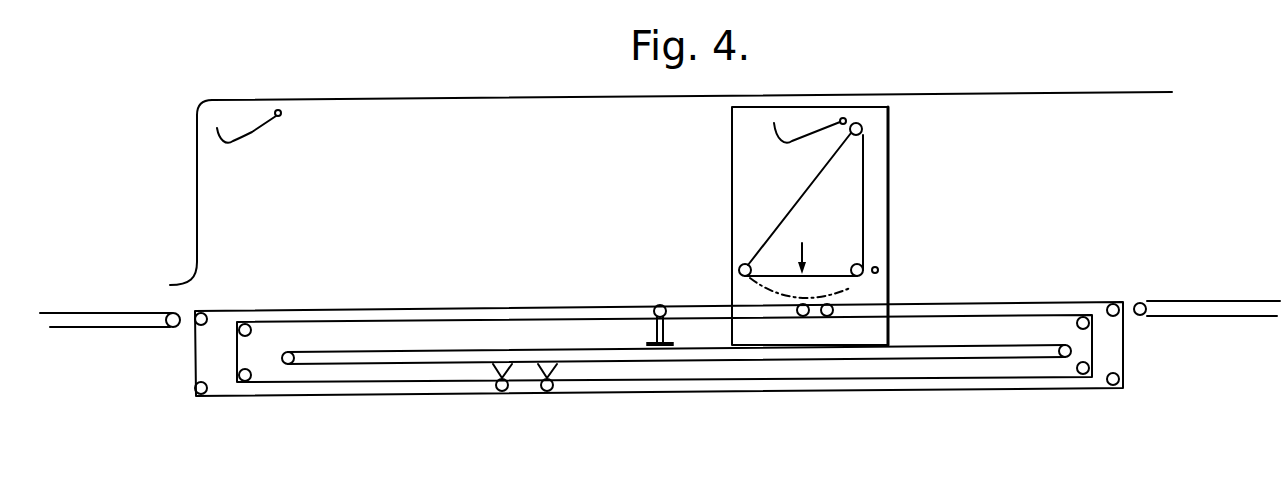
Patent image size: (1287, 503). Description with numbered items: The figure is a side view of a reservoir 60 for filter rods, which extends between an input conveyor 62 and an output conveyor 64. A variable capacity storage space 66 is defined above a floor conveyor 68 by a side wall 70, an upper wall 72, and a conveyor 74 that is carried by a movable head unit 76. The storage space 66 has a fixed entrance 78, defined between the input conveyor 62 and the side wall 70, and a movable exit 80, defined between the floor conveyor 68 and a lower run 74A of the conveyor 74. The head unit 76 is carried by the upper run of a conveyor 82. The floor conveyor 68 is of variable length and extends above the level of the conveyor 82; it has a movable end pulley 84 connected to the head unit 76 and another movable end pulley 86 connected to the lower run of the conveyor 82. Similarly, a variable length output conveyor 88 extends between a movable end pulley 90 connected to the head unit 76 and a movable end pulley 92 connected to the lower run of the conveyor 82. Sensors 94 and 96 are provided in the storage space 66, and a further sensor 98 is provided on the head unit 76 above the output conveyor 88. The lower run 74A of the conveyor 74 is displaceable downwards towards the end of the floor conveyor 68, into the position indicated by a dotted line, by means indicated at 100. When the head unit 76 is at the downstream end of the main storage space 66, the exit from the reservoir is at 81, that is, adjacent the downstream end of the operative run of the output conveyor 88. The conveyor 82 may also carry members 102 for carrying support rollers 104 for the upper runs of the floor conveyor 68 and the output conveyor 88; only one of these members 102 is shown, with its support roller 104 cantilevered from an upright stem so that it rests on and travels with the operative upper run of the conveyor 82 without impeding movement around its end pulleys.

The reservoir 60 is at (487, 83).
The input conveyor 62 is at (100, 312).
The output conveyor 64 is at (1200, 300).
The variable capacity storage space 66 is at (494, 218).
The floor conveyor 68 is at (413, 307).
The side wall 70 is at (197, 209).
The upper wall 72 is at (530, 99).
The conveyor 74 is at (779, 188).
The lower run 74A is at (827, 274).
The movable head unit 76 is at (888, 138).
The fixed entrance 78 is at (207, 287).
The movable exit 80 is at (829, 287).
The exit from the reservoir 81 is at (1133, 289).
The conveyor 82 is at (570, 348).
The movable end pulley 84 is at (803, 316).
The movable end pulley 86 is at (500, 391).
The variable length output conveyor 88 is at (1015, 302).
The movable end pulley 90 is at (829, 316).
The movable end pulley 92 is at (549, 391).
The sensor 94 is at (253, 134).
The sensor 96 is at (793, 138).
The sensor 98 is at (879, 271).
The means 100 is at (800, 253).
The member 102 is at (681, 319).
The support roller 104 is at (663, 305).